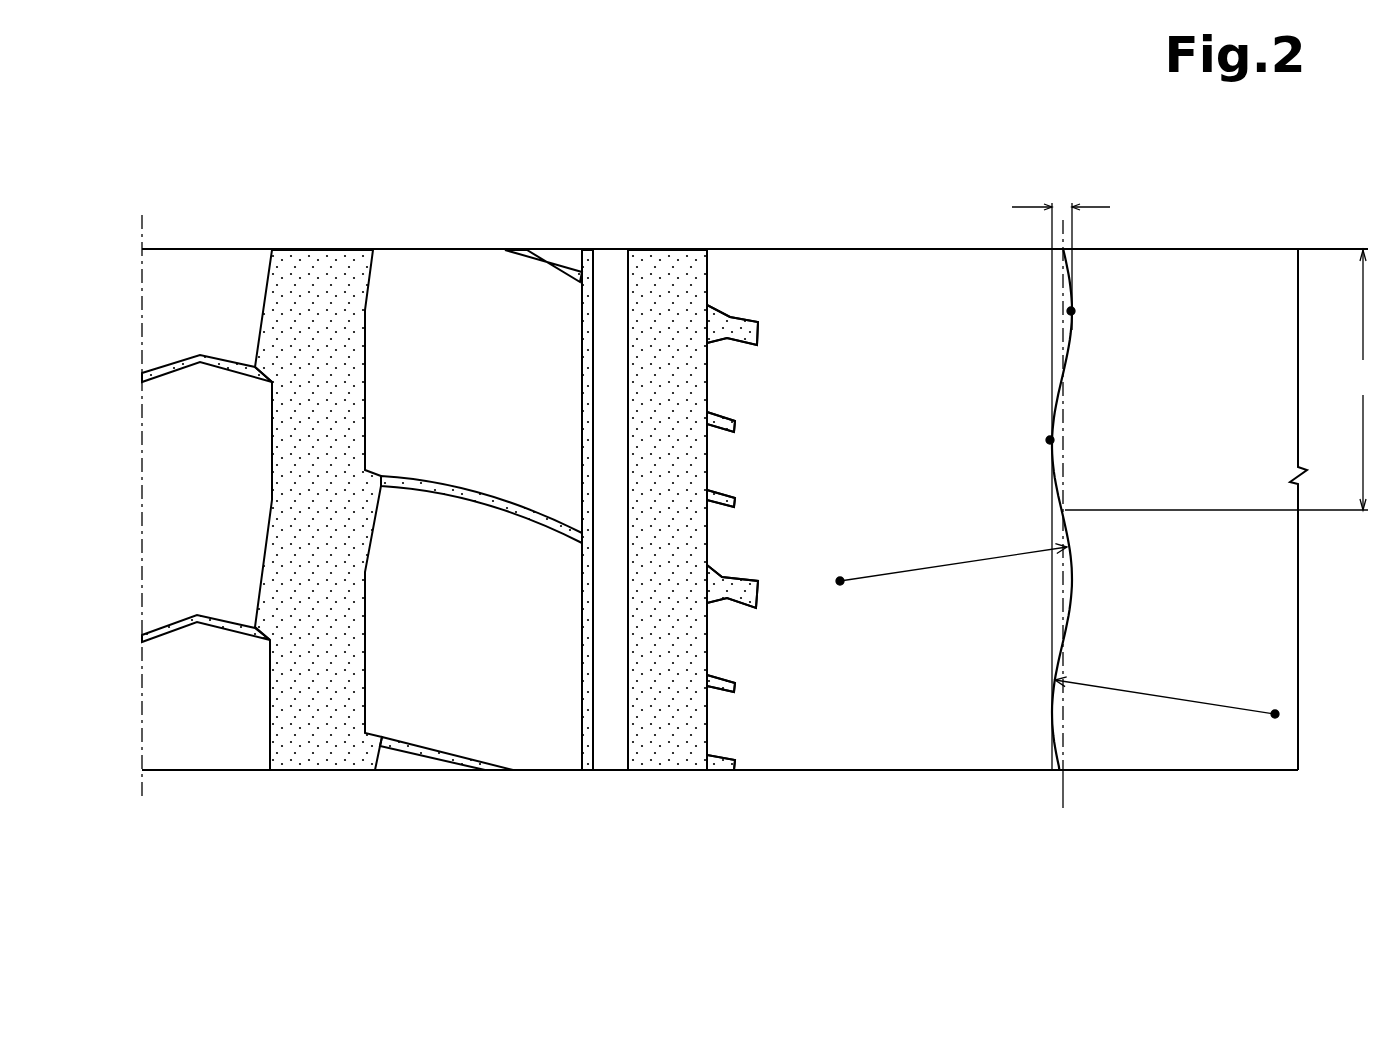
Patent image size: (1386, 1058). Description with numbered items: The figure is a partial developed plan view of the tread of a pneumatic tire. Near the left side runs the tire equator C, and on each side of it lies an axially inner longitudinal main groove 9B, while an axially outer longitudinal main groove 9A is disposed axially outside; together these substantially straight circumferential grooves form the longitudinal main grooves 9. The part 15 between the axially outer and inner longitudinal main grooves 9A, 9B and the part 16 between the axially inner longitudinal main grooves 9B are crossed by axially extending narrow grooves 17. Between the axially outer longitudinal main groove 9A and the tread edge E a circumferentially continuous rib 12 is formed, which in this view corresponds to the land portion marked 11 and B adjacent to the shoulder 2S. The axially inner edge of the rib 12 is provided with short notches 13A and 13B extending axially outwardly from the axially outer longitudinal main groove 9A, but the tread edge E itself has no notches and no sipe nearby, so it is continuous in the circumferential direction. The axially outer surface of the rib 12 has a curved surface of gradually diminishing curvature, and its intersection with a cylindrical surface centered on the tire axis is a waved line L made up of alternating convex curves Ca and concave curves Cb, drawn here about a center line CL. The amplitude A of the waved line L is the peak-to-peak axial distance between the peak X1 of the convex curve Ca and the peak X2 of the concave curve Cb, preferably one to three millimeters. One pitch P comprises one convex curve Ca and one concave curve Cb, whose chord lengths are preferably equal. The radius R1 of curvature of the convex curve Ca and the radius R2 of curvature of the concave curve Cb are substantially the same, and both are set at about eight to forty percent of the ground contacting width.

The tread edge 2S is at (857, 782).
The longitudinal main grooves 9 is at (506, 441).
The axially outer longitudinal main groove 9A is at (663, 258).
The axially inner longitudinal main groove 9B is at (322, 258).
The center land portion 11 is at (755, 446).
The circumferentially continuous rib 12 is at (829, 268).
The short notches 13A is at (750, 320).
The short notches 13B is at (722, 679).
The part between the axially outer and inner longitudinal main grooves 15 is at (458, 242).
The part between the axially inner longitudinal main grooves 16 is at (216, 237).
The narrow grooves 17 is at (180, 362).
The tire equator C is at (143, 490).
The center line of rib edge CL is at (1062, 795).
The tread edge E is at (1053, 733).
The convex curve Ca is at (1072, 330).
The concave curve Cb is at (1050, 440).
The peak of the convex curve X1 is at (1071, 311).
The peak of the concave curve X2 is at (1052, 462).
The amplitude A is at (1061, 190).
The pitch P is at (1362, 380).
The land portion B is at (1170, 320).
The waved line L is at (1085, 610).
The radius of curvature of the convex curve R1 is at (951, 560).
The radius of curvature of the concave curve R2 is at (1167, 690).